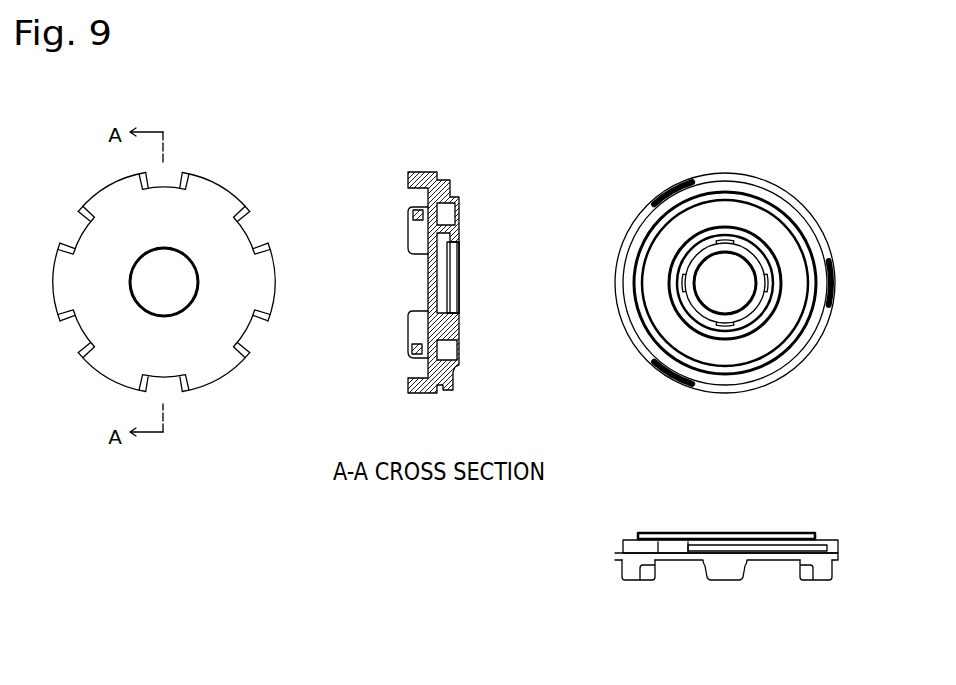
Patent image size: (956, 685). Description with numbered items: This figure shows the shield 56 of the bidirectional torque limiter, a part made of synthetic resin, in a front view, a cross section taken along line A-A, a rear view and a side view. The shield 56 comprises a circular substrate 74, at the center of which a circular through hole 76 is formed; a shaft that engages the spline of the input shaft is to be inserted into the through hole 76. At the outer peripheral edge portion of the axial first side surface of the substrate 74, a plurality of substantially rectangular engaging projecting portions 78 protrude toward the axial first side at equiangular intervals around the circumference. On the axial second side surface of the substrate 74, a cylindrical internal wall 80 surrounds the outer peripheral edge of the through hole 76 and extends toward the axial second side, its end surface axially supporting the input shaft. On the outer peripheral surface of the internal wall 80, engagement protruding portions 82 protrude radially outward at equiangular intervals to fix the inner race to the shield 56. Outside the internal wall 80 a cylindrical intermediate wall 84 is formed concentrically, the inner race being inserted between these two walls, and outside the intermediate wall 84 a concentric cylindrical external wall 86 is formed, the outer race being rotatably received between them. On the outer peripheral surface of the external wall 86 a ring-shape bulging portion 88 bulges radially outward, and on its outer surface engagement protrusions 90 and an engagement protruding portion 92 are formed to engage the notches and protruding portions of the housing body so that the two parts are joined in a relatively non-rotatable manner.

The shield 56 is at (421, 102).
The substrate 74 is at (125, 340).
The through hole 76 is at (152, 295).
The engaging projecting portions 78 is at (238, 350).
The internal wall 80 is at (459, 322).
The engagement protruding portions 82 is at (748, 247).
The intermediate wall 84 is at (457, 347).
The external wall 86 is at (458, 369).
The ring-shape bulging portion 88 is at (442, 395).
The engagement protrusions 90 is at (661, 187).
The engagement protruding portion 92 is at (446, 392).